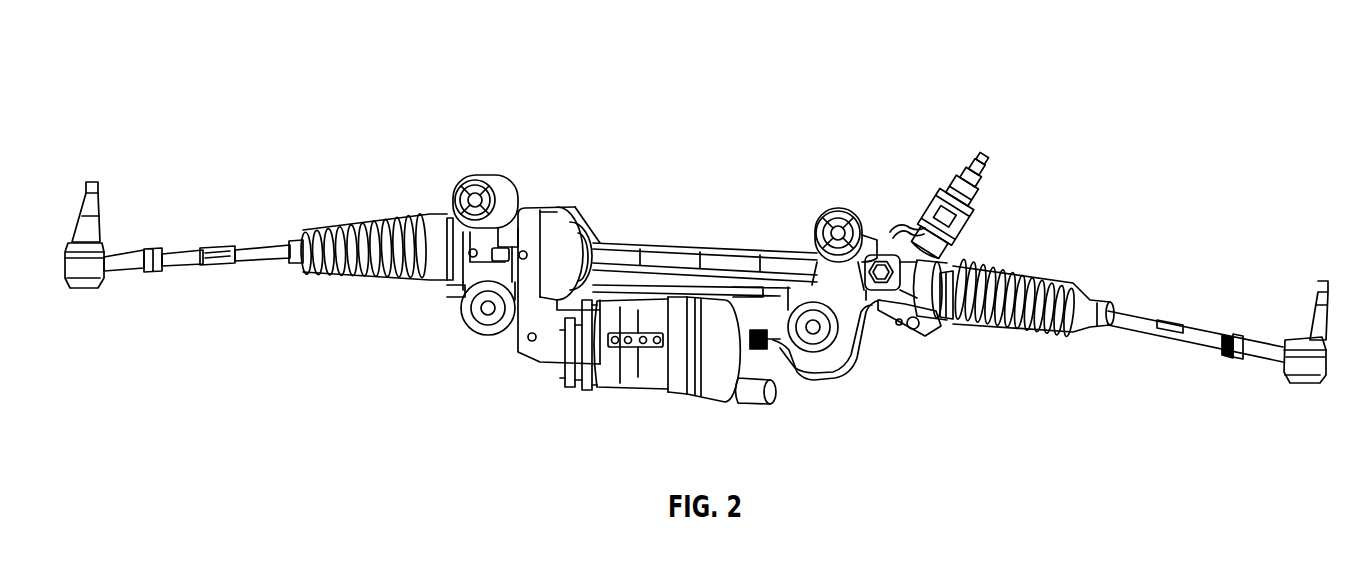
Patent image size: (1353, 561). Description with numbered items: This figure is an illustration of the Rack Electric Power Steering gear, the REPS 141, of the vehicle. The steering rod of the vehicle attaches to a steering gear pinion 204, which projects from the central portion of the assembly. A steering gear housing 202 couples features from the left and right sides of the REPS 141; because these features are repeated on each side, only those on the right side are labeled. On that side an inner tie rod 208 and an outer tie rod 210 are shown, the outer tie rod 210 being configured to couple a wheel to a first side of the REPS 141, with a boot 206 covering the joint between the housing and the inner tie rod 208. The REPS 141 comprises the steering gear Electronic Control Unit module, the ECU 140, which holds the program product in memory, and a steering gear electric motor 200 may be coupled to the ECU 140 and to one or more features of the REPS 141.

The Rack Electric Power Steering gear 141 is at (214, 71).
The steering gear Electronic Control Unit module 140 is at (727, 405).
The steering gear electric motor 200 is at (622, 386).
The steering gear housing 202 is at (778, 252).
The steering gear pinion 204 is at (983, 147).
The boot 206 is at (1020, 267).
The inner tie rod 208 is at (1135, 333).
The outer tie rod 210 is at (1257, 335).